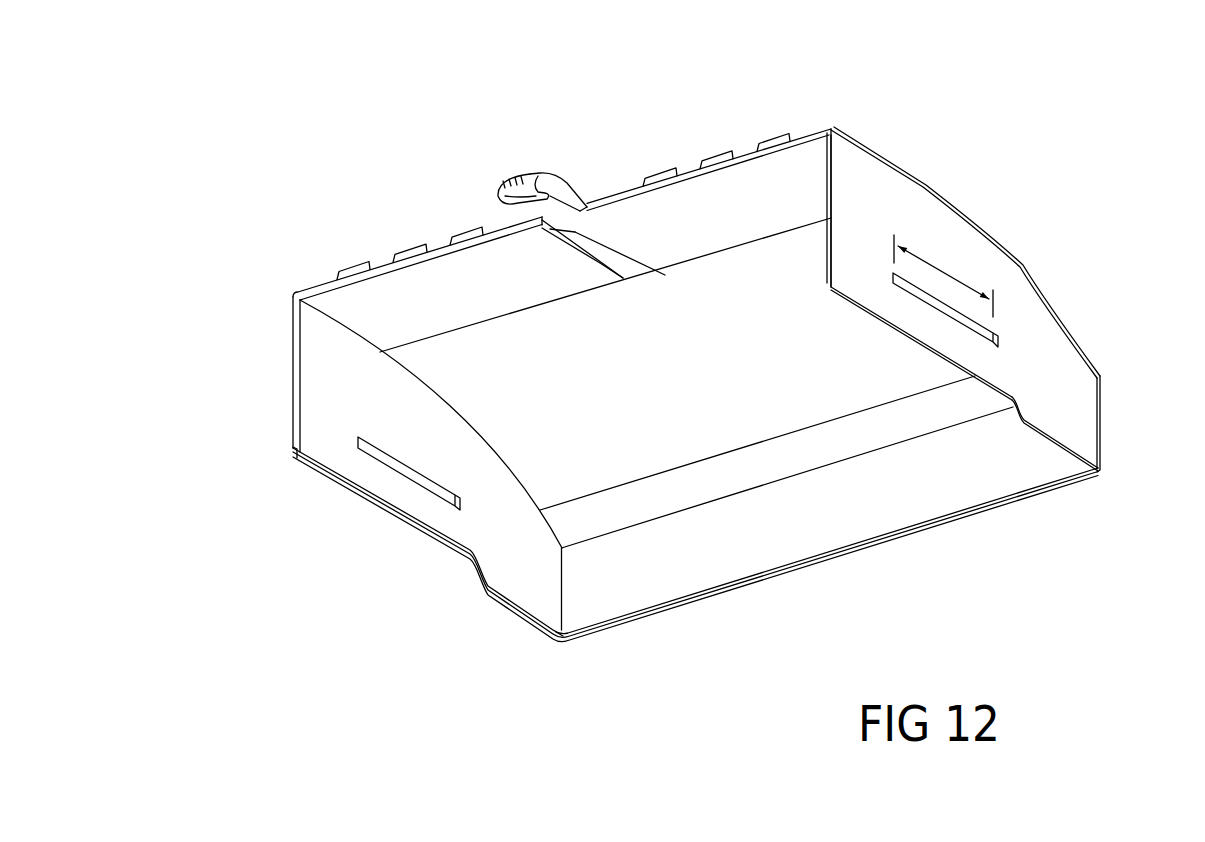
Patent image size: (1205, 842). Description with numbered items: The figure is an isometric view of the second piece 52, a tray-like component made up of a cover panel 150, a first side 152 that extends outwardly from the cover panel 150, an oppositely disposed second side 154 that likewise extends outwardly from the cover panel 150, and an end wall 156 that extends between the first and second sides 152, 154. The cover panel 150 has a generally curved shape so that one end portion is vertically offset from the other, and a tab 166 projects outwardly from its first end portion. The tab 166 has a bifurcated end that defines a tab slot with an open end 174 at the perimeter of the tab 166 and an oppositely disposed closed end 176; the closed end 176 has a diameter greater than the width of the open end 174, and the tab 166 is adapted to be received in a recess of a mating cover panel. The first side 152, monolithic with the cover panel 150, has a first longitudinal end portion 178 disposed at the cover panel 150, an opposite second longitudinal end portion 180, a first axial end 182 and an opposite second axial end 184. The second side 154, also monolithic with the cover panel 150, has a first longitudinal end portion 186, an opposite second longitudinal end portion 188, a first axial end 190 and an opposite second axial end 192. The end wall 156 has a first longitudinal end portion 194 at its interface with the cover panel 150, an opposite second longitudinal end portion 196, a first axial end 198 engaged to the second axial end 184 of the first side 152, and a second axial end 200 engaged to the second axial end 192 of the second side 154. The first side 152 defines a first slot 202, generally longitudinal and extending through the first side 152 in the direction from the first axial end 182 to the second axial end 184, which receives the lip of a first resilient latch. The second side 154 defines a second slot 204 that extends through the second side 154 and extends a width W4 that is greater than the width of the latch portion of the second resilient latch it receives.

The second piece 52 is at (403, 103).
The cover panel 150 is at (776, 130).
The first side 152 is at (310, 480).
The second side 154 is at (995, 272).
The end wall 156 is at (823, 572).
The tab 166 is at (570, 158).
The open end 174 is at (516, 177).
The closed end 176 is at (522, 201).
The first longitudinal end portion 178 is at (403, 382).
The second longitudinal end portion 180 is at (452, 526).
The first axial end 182 is at (319, 384).
The second axial end 184 is at (553, 583).
The first longitudinal end portion 186 is at (950, 222).
The second longitudinal end portion 188 is at (943, 344).
The first axial end 190 is at (848, 256).
The second axial end 192 is at (1092, 404).
The first longitudinal end portion 194 is at (783, 488).
The second longitudinal end portion 196 is at (801, 548).
The first axial end 198 is at (577, 585).
The second axial end 200 is at (1055, 458).
The first slot 202 is at (400, 478).
The second slot 204 is at (920, 301).
The width of the second slot W4 is at (943, 276).